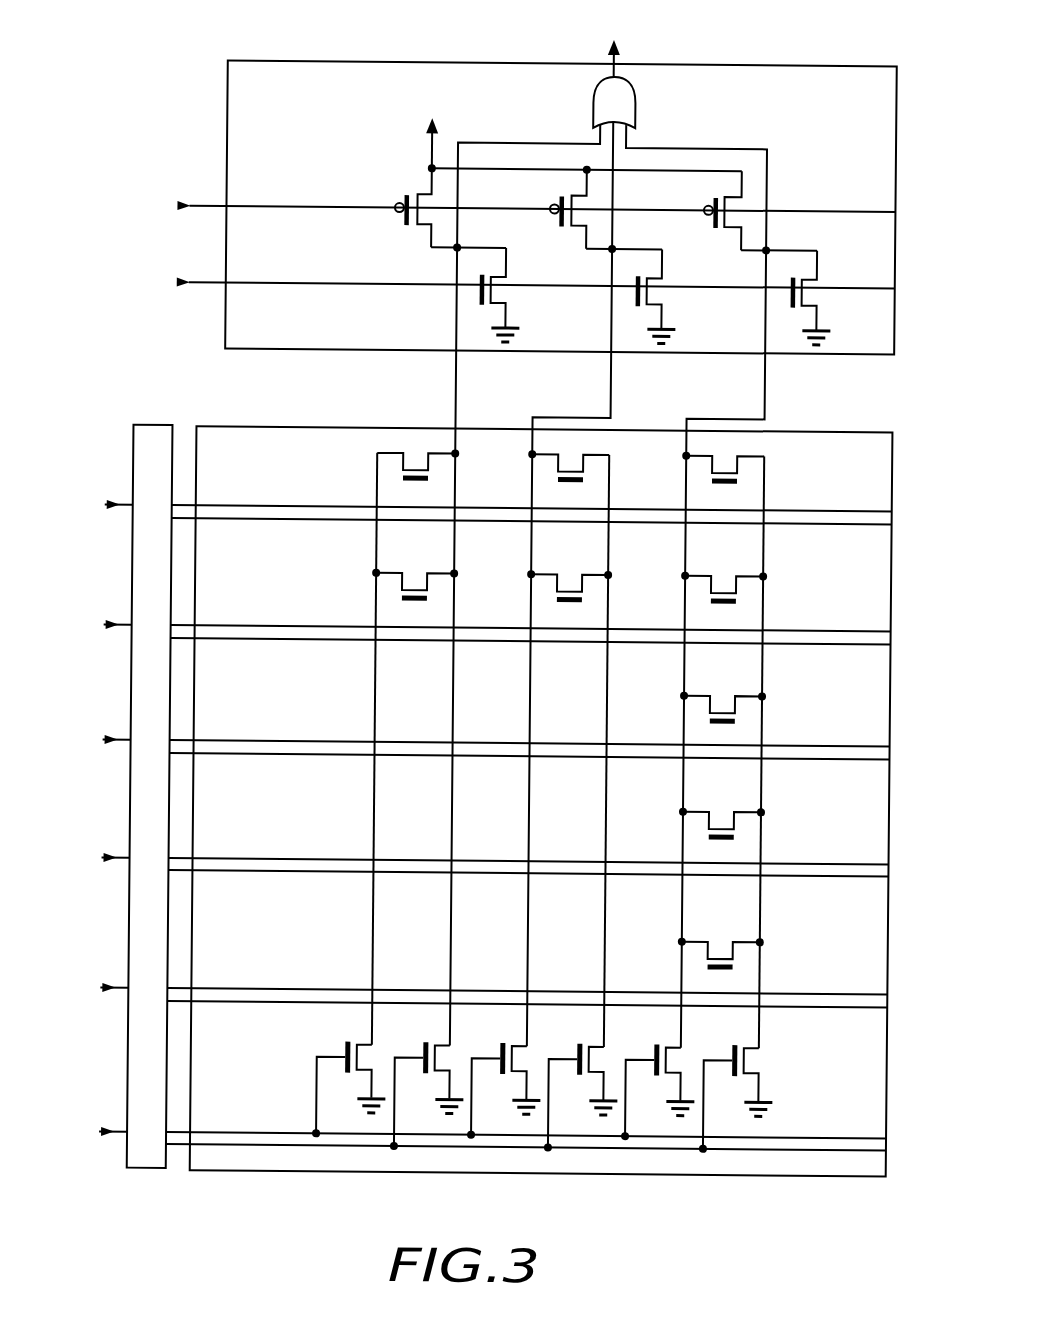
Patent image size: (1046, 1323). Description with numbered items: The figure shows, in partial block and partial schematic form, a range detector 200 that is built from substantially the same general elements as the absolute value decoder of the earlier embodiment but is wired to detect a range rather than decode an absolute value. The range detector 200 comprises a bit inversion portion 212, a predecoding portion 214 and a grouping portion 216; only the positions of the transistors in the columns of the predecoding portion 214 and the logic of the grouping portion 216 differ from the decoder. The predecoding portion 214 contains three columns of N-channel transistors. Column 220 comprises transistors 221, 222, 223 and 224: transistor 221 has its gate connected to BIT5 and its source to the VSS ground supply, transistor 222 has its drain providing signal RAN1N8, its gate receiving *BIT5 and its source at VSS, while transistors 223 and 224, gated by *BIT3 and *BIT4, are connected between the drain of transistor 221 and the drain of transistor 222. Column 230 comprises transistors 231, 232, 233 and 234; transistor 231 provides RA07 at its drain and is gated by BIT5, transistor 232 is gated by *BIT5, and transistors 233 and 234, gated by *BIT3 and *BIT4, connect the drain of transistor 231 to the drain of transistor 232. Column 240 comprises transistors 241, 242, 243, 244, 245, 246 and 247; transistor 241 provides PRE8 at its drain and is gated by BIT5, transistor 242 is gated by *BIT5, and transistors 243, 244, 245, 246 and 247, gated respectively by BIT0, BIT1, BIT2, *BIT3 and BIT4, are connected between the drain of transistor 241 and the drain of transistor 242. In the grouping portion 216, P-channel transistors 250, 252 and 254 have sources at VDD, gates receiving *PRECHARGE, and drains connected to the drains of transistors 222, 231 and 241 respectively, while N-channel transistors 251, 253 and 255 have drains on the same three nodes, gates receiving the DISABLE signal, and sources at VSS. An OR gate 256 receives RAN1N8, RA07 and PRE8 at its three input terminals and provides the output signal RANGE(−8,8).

The range detector 200 is at (114, 99).
The bit inversion portion 212 is at (156, 427).
The predecoding portion 214 is at (244, 428).
The grouping portion 216 is at (163, 134).
The column 220 is at (403, 1198).
The N-channel transistor 221 is at (363, 1044).
The N-channel transistor 222 is at (441, 1044).
The N-channel transistor 223 is at (414, 641).
The N-channel transistor 224 is at (414, 521).
The column 230 is at (546, 1198).
The N-channel transistor 231 is at (518, 1044).
The N-channel transistor 232 is at (595, 1044).
The N-channel transistor 233 is at (568, 628).
The N-channel transistor 234 is at (568, 508).
The column 240 is at (698, 1198).
The N-channel transistor 241 is at (672, 1044).
The N-channel transistor 242 is at (750, 1044).
The N-channel transistor 243 is at (722, 991).
The N-channel transistor 244 is at (722, 861).
The N-channel transistor 245 is at (722, 743).
The N-channel transistor 246 is at (722, 641).
The N-channel transistor 247 is at (722, 508).
The P-channel transistor 250 is at (413, 227).
The N-channel transistor 251 is at (503, 291).
The P-channel transistor 252 is at (567, 227).
The N-channel transistor 253 is at (659, 291).
The P-channel transistor 254 is at (720, 227).
The N-channel transistor 255 is at (814, 291).
The OR gate 256 is at (590, 118).